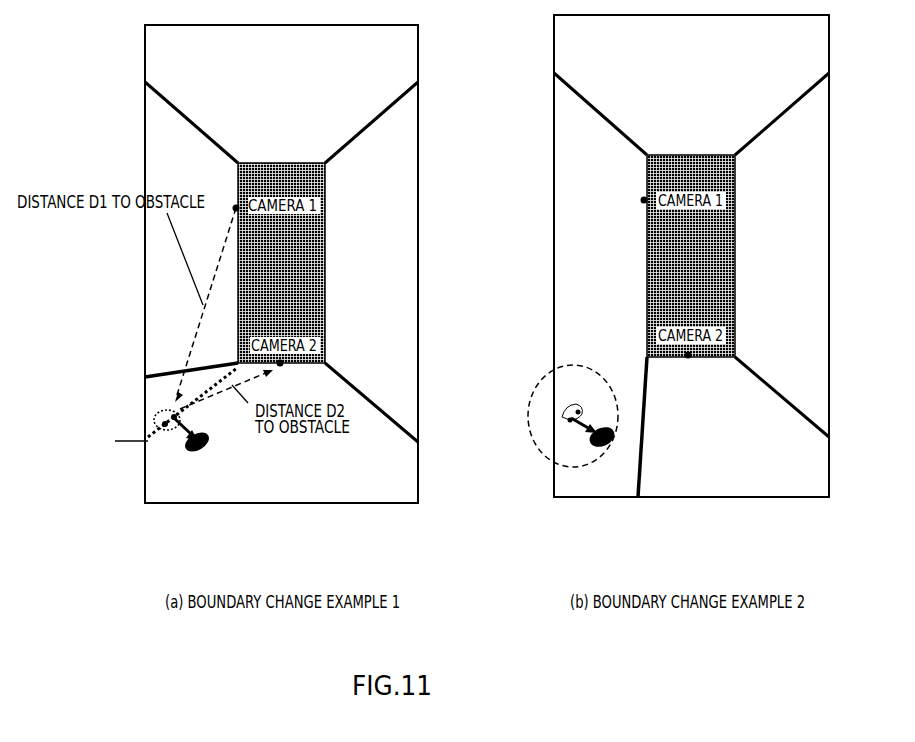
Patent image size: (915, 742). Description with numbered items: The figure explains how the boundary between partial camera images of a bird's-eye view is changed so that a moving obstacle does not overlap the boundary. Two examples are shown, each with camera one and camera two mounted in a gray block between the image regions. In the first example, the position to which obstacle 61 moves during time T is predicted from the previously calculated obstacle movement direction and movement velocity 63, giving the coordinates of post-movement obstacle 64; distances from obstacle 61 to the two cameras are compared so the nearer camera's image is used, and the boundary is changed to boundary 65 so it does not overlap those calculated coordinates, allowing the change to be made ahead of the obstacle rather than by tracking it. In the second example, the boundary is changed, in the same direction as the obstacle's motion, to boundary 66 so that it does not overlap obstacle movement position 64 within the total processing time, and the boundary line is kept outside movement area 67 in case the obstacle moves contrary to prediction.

The obstacle 61 is at (163, 412).
The obstacle movement direction and movement velocity 63 is at (177, 425).
The post-movement obstacle 64 is at (202, 453).
The boundary 65 is at (160, 373).
The boundary 66 is at (647, 443).
The movement area 67 is at (535, 443).